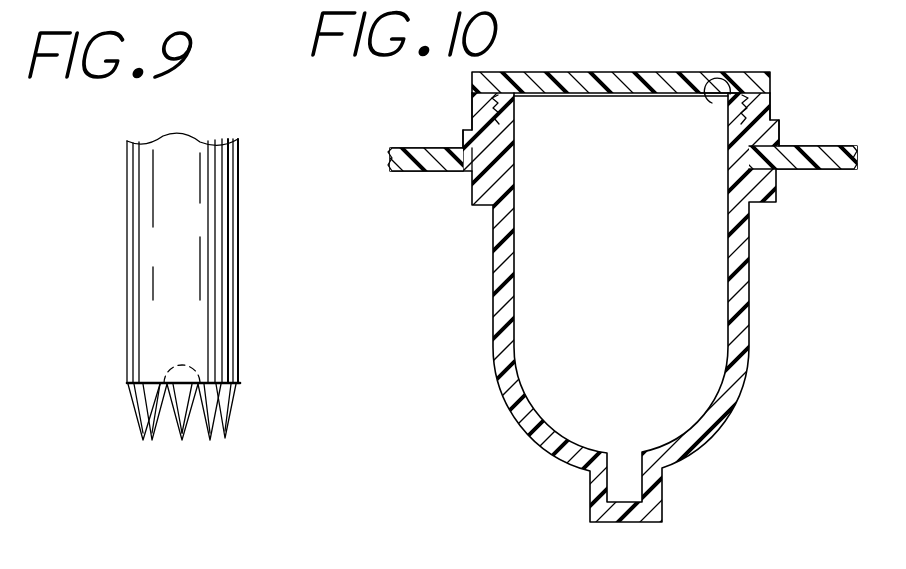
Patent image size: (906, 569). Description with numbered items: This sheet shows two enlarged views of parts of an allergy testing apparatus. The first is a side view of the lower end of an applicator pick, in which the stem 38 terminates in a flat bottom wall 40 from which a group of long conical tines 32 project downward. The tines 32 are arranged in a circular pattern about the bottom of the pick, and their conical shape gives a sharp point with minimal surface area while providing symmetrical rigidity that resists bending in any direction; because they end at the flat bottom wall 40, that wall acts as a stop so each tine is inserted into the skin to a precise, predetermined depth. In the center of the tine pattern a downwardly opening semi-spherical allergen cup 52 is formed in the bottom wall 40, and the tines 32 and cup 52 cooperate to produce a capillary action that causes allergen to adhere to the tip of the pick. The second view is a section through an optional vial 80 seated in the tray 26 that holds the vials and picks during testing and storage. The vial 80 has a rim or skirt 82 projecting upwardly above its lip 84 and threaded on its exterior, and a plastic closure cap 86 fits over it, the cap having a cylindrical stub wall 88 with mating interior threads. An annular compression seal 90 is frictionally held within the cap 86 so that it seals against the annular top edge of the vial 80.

In FIG. 9, the stem 38 is at (232, 171).
In FIG. 9, the flat bottom wall 40 is at (140, 371).
In FIG. 9, the allergen cup 52 is at (196, 369).
In FIG. 9, the tines 32 is at (226, 399).
In FIG. 10, the closure cap 86 is at (558, 72).
In FIG. 10, the rim or skirt 82 is at (712, 70).
In FIG. 10, the annular compression seal 90 is at (748, 92).
In FIG. 10, the cylindrical stub wall 88 is at (772, 87).
In FIG. 10, the lip 84 is at (778, 127).
In FIG. 10, the tray 26 is at (784, 186).
In FIG. 10, the vial 80 is at (756, 297).